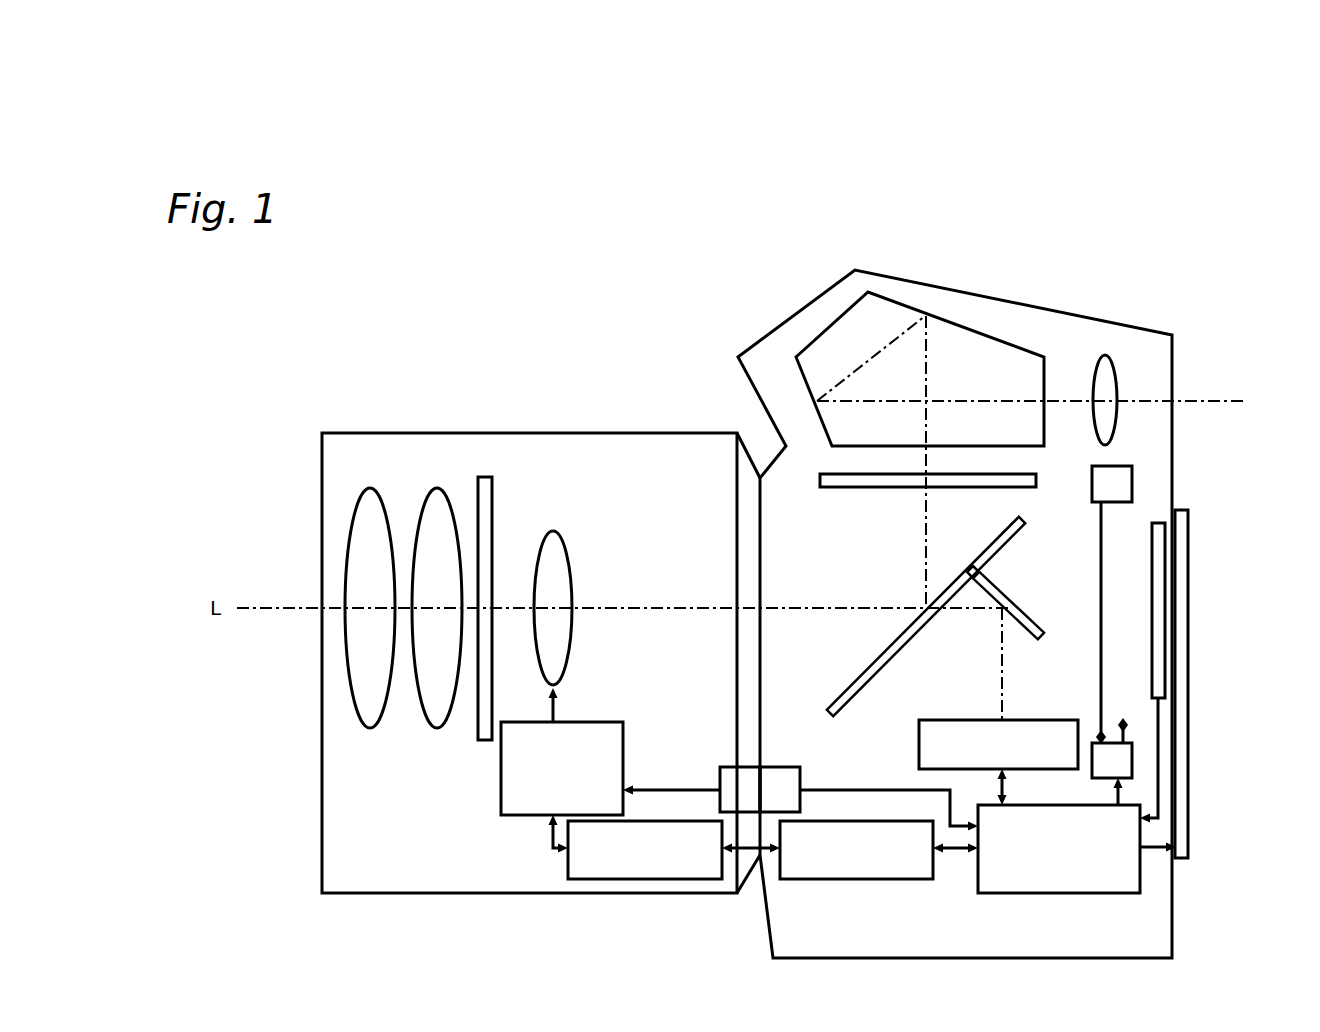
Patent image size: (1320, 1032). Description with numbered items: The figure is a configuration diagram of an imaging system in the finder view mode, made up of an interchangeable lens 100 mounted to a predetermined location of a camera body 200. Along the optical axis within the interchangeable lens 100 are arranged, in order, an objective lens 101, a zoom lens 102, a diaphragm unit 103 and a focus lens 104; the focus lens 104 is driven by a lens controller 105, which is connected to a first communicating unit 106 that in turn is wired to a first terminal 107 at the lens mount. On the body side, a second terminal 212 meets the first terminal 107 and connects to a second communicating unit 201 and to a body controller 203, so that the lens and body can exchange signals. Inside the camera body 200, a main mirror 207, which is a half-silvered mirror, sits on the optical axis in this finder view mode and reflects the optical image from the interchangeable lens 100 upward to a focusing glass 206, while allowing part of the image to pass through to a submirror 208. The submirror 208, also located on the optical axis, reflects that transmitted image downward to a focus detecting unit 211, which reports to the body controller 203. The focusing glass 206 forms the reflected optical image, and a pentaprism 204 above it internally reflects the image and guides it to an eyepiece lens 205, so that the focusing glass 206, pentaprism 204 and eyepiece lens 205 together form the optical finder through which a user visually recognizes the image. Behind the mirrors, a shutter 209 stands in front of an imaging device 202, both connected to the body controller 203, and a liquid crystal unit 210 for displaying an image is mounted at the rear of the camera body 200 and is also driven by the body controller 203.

The interchangeable lens 100 is at (310, 468).
The objective lens 101 is at (367, 490).
The zoom lens 102 is at (435, 490).
The diaphragm unit 103 is at (485, 477).
The focus lens 104 is at (551, 532).
The lens controller 105 is at (552, 822).
The first communicating unit 106 is at (655, 878).
The first terminal 107 is at (720, 778).
The camera body 200 is at (751, 332).
The second communicating unit 201 is at (835, 880).
The imaging device 202 is at (1165, 580).
The body controller 203 is at (1028, 893).
The pentaprism 204 is at (957, 323).
The eyepiece lens 205 is at (1113, 368).
The focusing glass 206 is at (820, 480).
The main mirror 207 is at (848, 685).
The submirror 208 is at (990, 597).
The shutter 209 is at (1132, 495).
The liquid crystal unit (LCD) 210 is at (1188, 818).
The focus detecting unit 211 is at (919, 745).
The second terminal 212 is at (782, 763).